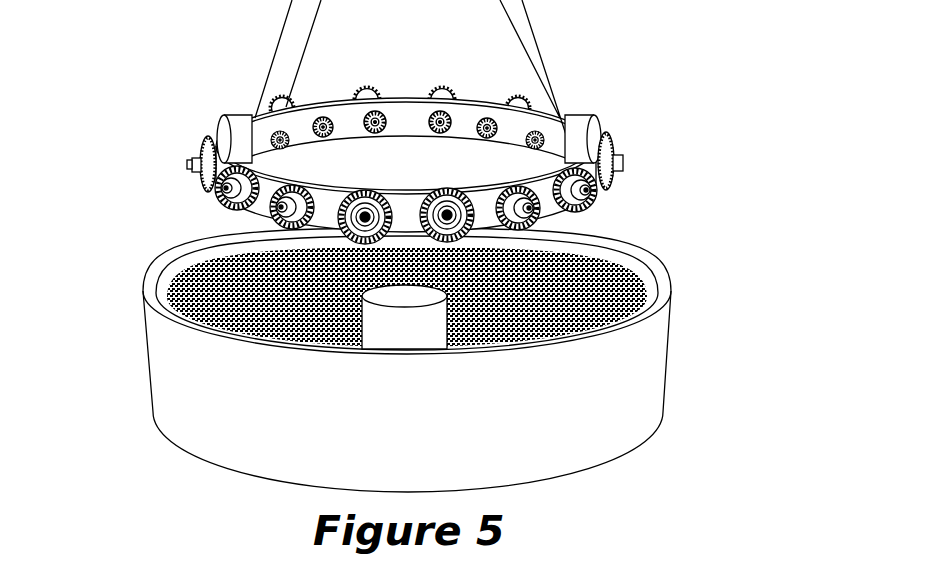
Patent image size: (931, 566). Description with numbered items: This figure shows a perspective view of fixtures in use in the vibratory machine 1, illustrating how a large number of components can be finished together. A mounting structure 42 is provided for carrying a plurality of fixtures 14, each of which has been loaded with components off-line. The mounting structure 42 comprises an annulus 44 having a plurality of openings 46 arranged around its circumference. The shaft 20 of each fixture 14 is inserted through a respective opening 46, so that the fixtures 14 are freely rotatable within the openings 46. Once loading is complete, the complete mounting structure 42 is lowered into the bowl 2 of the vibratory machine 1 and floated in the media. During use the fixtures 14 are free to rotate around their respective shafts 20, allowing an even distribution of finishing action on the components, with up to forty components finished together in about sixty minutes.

The vibratory machine 1 is at (465, 122).
The bowl 2 is at (663, 265).
The fixture 14 is at (623, 163).
The shaft 20 is at (192, 165).
The mounting structure 42 is at (563, 118).
The annulus 44 is at (256, 118).
The opening 46 is at (309, 118).